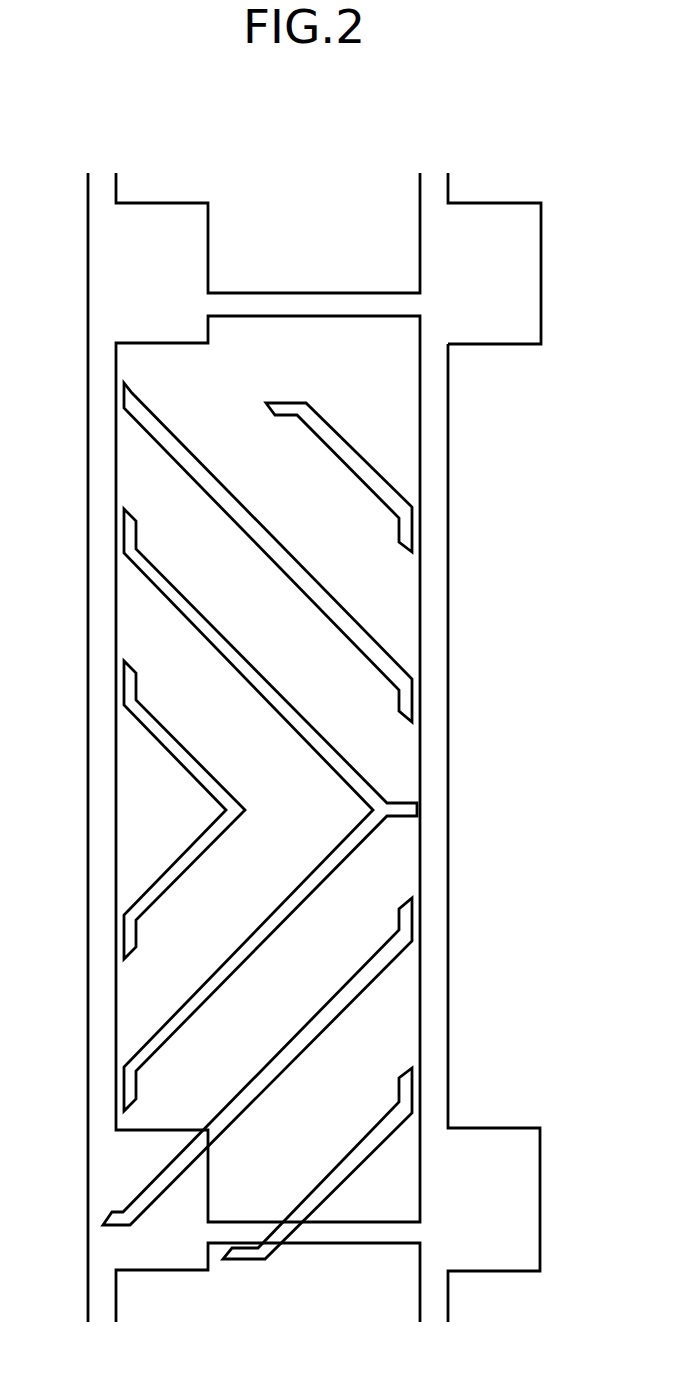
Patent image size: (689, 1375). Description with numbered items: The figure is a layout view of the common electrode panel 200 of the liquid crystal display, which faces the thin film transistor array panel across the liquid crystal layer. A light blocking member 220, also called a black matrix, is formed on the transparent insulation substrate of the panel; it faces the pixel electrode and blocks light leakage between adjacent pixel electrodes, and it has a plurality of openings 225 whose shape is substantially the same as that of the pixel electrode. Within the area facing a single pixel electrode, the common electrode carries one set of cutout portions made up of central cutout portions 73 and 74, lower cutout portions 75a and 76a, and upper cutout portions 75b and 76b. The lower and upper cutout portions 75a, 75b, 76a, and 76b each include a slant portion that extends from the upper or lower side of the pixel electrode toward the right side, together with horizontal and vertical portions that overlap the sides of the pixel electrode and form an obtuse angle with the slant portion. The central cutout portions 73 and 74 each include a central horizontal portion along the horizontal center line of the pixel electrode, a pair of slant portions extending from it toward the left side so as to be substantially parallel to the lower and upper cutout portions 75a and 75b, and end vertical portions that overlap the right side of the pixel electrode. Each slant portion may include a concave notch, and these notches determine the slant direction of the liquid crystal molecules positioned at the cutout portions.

The common electrode panel 200 is at (584, 158).
The opening 225 is at (115, 787).
The light blocking member 220 is at (420, 1177).
The central cutout portion 73 is at (165, 867).
The central cutout portion 74 is at (361, 770).
The lower cutout portion 75a is at (364, 995).
The upper cutout portion 75b is at (364, 624).
The lower cutout portion 76a is at (340, 1188).
The upper cutout portion 76b is at (363, 454).